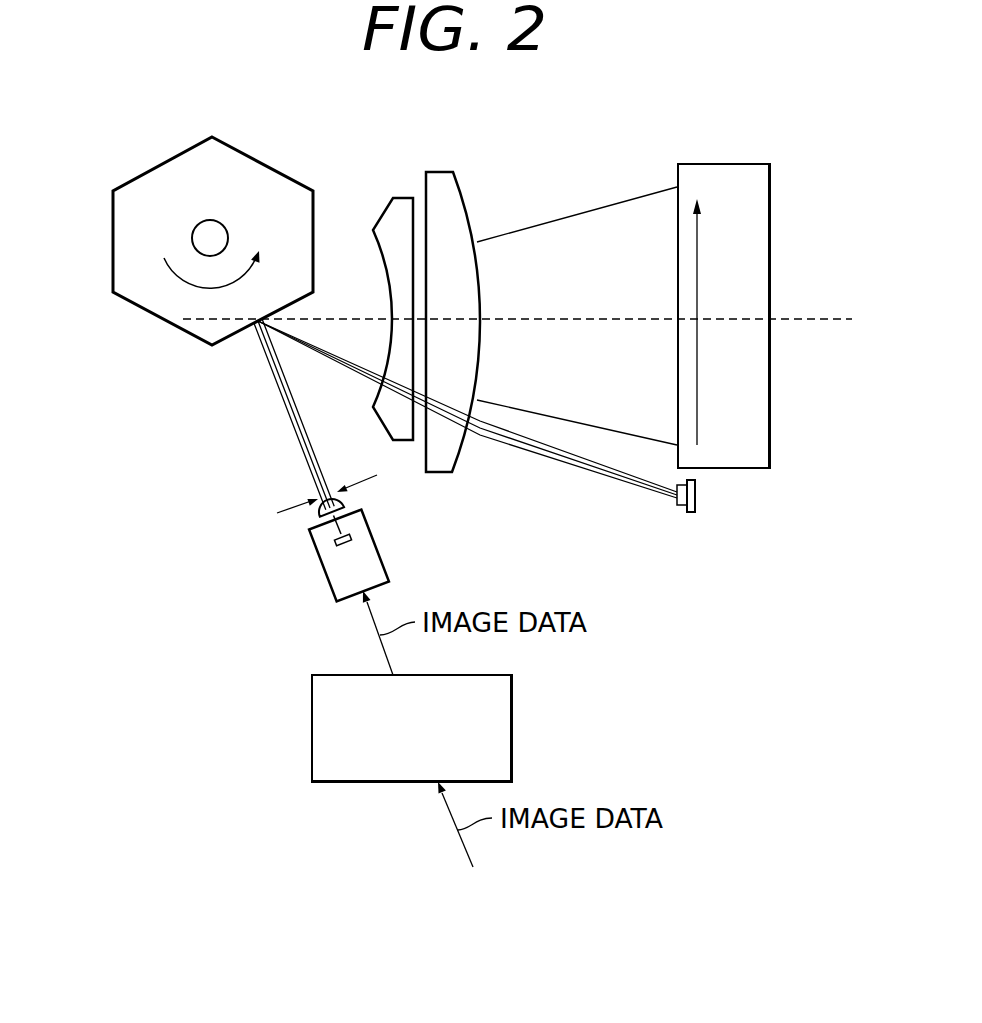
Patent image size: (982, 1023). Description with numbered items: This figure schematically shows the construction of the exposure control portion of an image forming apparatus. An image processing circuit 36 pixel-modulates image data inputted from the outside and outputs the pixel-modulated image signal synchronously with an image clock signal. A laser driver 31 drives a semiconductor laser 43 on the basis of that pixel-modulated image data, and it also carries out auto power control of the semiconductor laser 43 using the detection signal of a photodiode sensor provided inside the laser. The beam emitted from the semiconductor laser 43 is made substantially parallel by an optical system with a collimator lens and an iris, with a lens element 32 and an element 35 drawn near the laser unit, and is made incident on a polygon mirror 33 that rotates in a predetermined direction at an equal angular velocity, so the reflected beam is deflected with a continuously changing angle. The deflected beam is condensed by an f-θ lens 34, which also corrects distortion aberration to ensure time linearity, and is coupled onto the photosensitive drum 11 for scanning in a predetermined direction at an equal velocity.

The photosensitive drum 11 is at (758, 200).
The laser driver 31 is at (373, 575).
The collimator lens 32 is at (297, 508).
The polygon mirror 33 is at (116, 232).
The f-θ lens 34 is at (483, 165).
The semiconductor laser 35 is at (318, 516).
The image processing circuit 36 is at (695, 498).
The semiconductor laser 43 is at (352, 538).